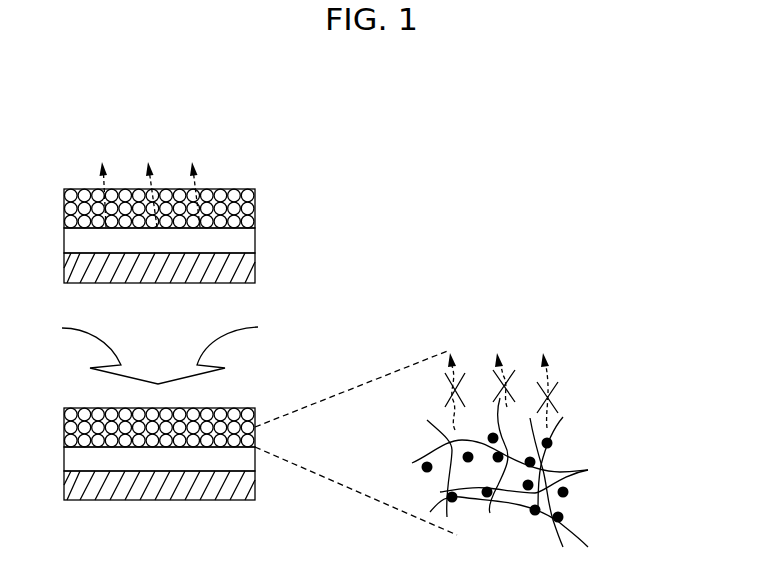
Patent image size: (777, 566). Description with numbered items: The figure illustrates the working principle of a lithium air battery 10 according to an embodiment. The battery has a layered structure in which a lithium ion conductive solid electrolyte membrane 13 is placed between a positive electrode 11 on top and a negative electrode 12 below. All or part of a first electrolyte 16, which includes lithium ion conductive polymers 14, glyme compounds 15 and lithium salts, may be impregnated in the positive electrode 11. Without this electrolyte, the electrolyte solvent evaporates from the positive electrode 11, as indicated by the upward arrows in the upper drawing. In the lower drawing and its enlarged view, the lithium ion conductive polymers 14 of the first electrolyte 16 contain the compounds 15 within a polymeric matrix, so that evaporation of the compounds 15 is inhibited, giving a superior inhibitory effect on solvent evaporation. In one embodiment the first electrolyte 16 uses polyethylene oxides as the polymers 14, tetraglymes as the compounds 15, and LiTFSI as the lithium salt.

The lithium air battery 10 is at (204, 196).
The positive electrode 11 is at (258, 200).
The negative electrode 12 is at (258, 270).
The lithium ion conductive solid electrolyte membrane 13 is at (258, 243).
The lithium ion conductive polymers 14 is at (565, 426).
The compounds of Formula 1 15 is at (577, 492).
The first electrolyte 16 is at (557, 450).